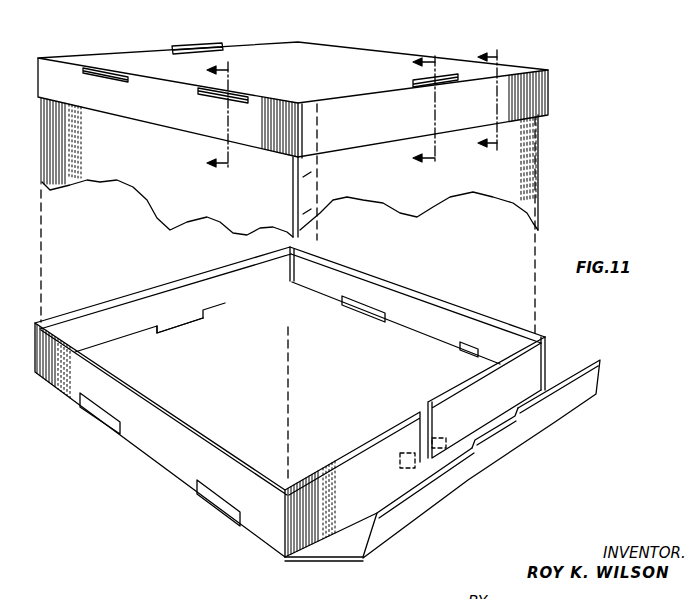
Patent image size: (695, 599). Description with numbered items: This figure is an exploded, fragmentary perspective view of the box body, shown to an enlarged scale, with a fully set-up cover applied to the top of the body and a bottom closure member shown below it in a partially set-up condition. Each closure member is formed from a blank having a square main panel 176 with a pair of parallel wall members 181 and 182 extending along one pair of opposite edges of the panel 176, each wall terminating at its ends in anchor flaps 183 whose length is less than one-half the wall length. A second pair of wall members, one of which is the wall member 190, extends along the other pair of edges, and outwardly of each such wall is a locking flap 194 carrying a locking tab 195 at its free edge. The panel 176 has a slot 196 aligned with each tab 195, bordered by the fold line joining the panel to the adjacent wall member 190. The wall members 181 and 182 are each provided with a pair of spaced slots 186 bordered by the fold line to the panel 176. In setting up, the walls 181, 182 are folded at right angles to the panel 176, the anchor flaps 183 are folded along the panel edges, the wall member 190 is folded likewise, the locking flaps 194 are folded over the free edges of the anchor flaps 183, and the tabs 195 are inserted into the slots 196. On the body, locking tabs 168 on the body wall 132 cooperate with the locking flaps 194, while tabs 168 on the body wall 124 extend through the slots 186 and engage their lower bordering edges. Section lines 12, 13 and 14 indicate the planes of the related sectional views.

The section line 12- 12 is at (410, 113).
The section line 13- 13 is at (499, 100).
The section line 14- 14 is at (231, 118).
The body wall 124 is at (205, 205).
The body wall 132 is at (447, 204).
The locking tab 168 is at (113, 78).
The main panel 176 is at (318, 74).
The wall member 181 is at (417, 318).
The wall member 182 is at (158, 128).
The anchor flap 183 is at (508, 403).
The slot 186 is at (112, 70).
The wall member 190 is at (338, 155).
The locking flap 194 is at (180, 315).
The locking tab 195 is at (192, 44).
The slot 196 is at (180, 336).